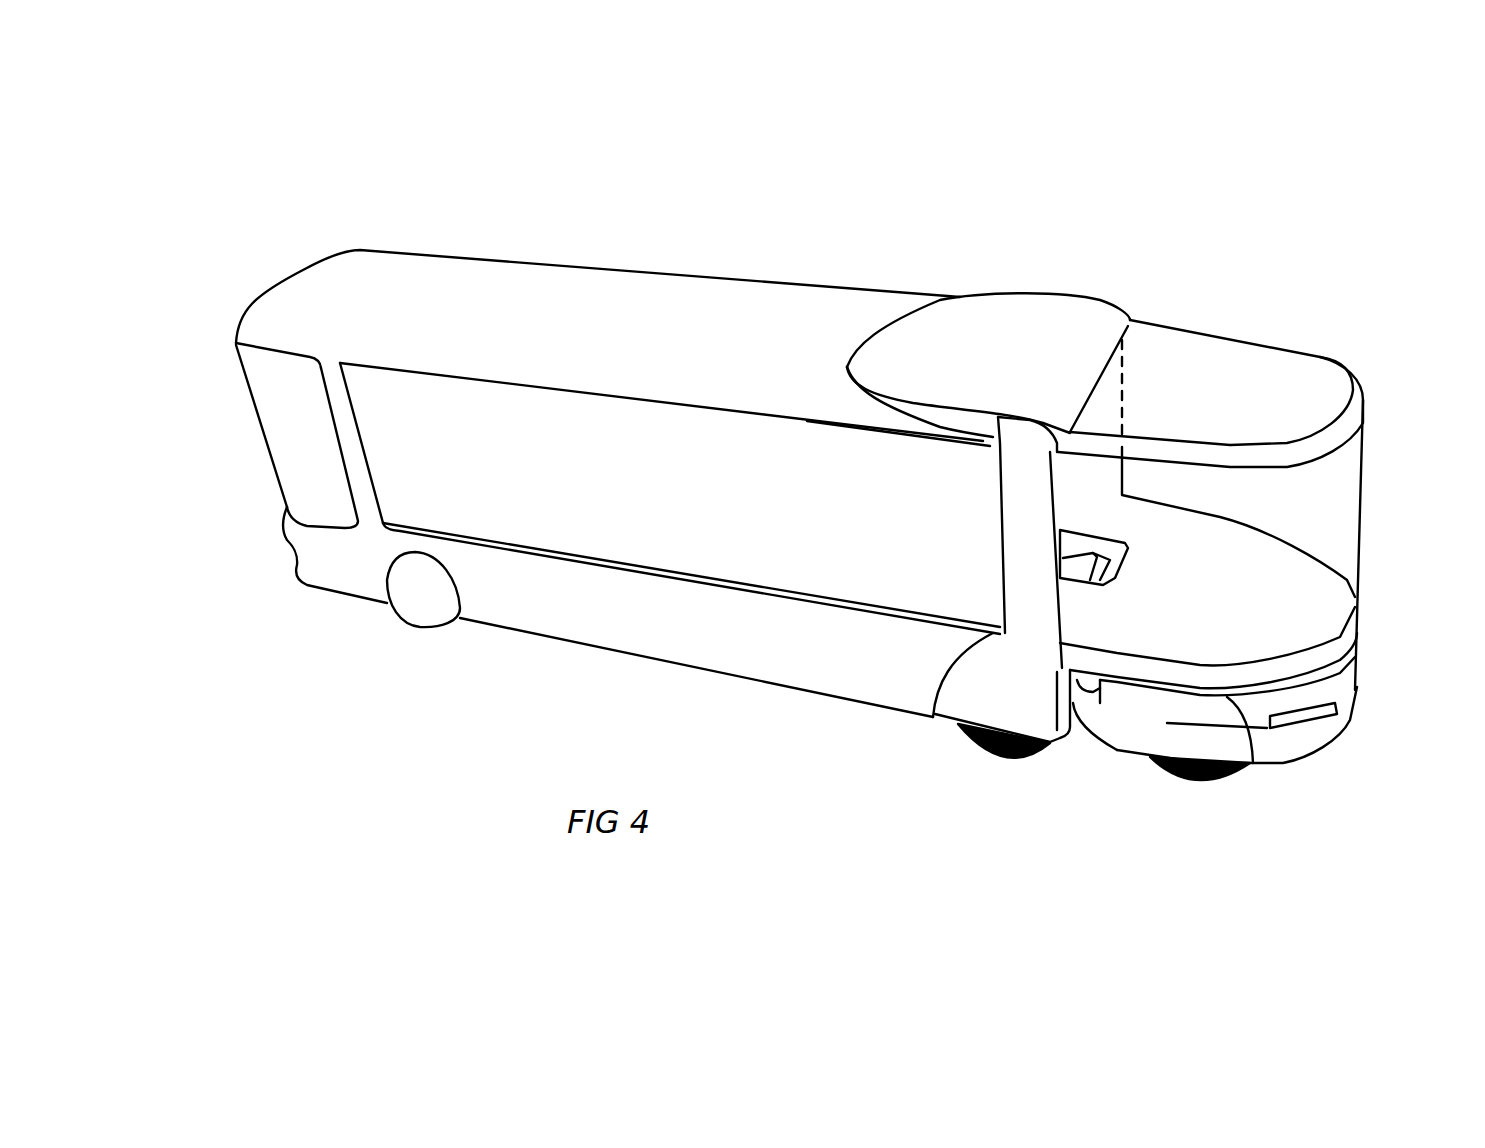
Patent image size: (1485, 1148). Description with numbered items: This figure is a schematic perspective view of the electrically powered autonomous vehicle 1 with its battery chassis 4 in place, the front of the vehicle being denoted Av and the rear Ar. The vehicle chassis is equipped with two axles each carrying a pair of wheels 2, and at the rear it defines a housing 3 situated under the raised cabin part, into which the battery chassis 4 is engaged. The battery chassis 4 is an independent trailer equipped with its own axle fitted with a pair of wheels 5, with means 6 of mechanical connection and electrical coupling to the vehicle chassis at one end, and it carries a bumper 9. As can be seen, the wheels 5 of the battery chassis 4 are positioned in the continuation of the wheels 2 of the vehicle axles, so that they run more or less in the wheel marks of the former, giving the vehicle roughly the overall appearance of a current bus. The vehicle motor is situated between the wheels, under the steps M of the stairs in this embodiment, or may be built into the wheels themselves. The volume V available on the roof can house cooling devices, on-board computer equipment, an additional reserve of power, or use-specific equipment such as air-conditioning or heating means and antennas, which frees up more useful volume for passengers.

The electrically powered autonomous vehicle 1 is at (585, 248).
The wheels 2 is at (433, 613).
The housing 3 is at (1078, 766).
The battery chassis 4 is at (1386, 669).
The wheels 5 is at (1193, 783).
The means of mechanical connection 6 is at (1067, 743).
The bumper 9 is at (1317, 740).
The steps M is at (1060, 583).
The volume V is at (1060, 320).
The front Av is at (215, 440).
The rear Ar is at (1386, 559).